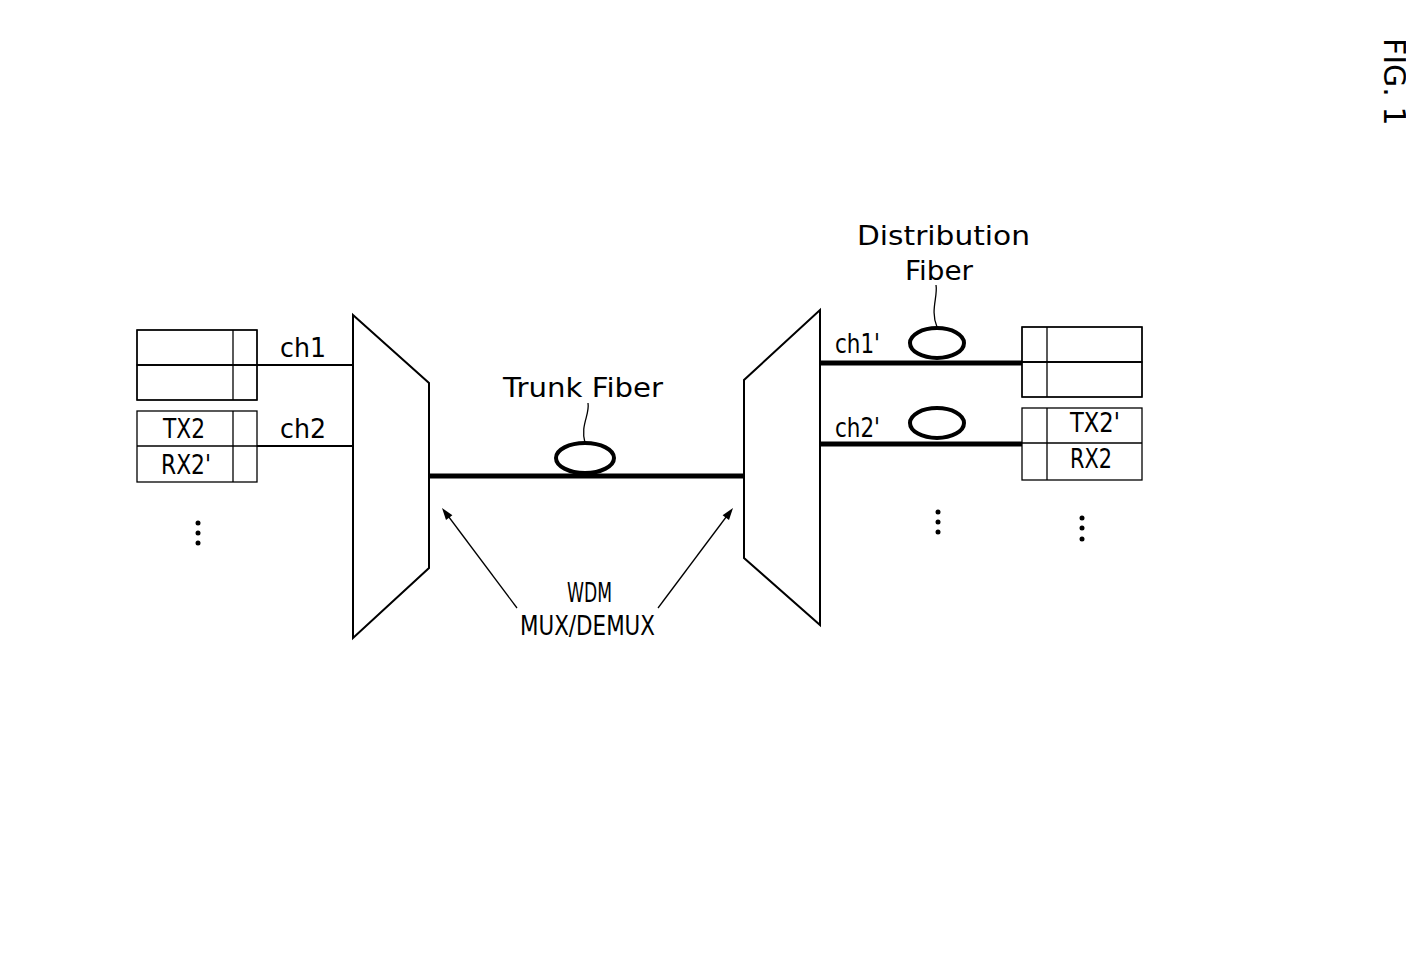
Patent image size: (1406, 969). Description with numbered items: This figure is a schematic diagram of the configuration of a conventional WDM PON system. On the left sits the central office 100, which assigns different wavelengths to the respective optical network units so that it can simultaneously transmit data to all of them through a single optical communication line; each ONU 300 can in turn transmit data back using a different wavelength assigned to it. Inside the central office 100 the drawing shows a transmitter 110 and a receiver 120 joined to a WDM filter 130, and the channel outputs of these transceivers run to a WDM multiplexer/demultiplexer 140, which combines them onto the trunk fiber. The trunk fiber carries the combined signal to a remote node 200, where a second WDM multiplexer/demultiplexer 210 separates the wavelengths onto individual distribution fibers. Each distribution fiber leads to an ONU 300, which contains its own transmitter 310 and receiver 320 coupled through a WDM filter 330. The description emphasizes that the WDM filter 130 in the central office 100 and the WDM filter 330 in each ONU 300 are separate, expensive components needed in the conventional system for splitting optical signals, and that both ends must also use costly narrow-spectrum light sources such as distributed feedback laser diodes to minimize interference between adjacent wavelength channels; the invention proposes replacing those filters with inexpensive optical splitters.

The central office 100 is at (308, 728).
The transmitter TX1 110 is at (137, 349).
The receiver RX1' 120 is at (137, 387).
The WDM filter 130 is at (188, 330).
The WDM multiplexer/demultiplexer 140 is at (392, 348).
The remote node (RN) 200 is at (827, 728).
The WDM multiplexer/demultiplexer 210 is at (781, 344).
The ONU 300 is at (1083, 728).
The transmitter TX1' 310 is at (1142, 345).
The receiver RX1 320 is at (1142, 383).
The WDM filter 330 is at (1083, 327).